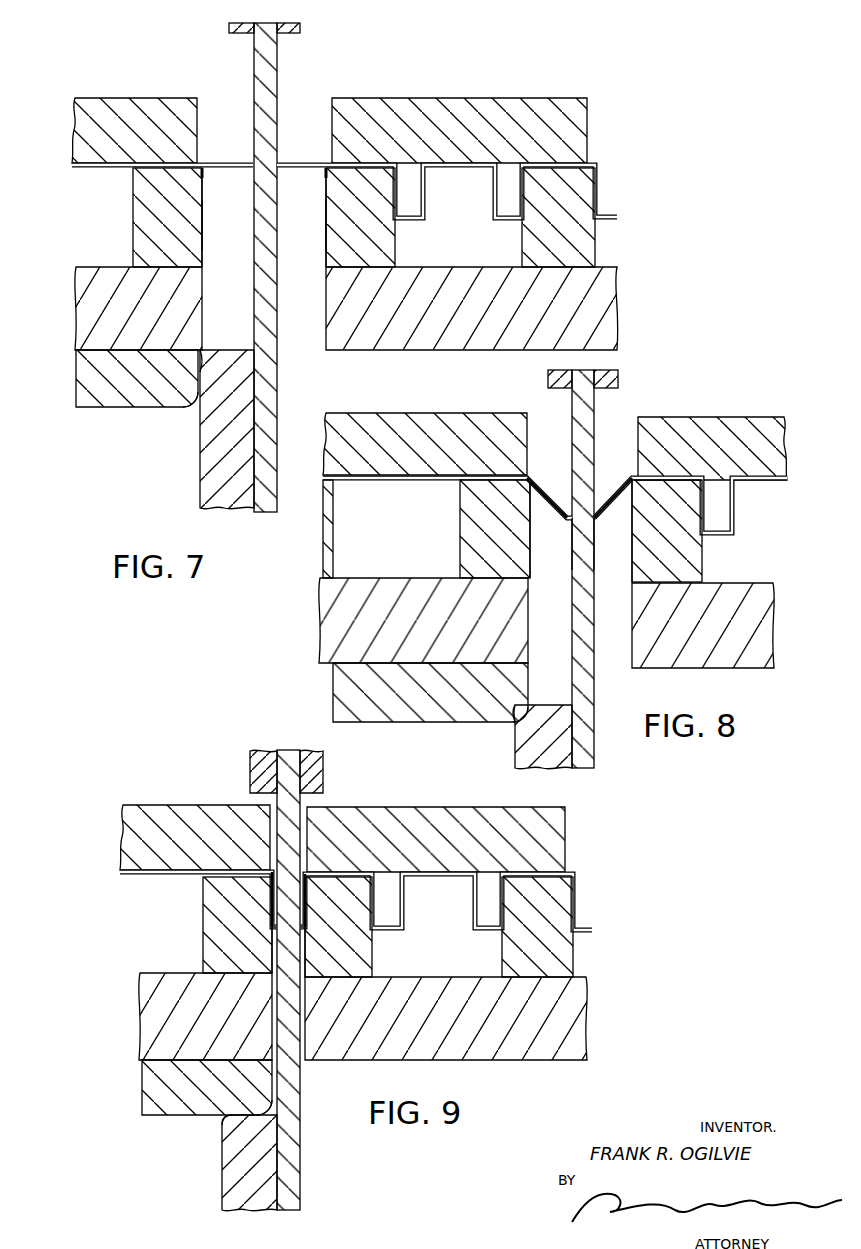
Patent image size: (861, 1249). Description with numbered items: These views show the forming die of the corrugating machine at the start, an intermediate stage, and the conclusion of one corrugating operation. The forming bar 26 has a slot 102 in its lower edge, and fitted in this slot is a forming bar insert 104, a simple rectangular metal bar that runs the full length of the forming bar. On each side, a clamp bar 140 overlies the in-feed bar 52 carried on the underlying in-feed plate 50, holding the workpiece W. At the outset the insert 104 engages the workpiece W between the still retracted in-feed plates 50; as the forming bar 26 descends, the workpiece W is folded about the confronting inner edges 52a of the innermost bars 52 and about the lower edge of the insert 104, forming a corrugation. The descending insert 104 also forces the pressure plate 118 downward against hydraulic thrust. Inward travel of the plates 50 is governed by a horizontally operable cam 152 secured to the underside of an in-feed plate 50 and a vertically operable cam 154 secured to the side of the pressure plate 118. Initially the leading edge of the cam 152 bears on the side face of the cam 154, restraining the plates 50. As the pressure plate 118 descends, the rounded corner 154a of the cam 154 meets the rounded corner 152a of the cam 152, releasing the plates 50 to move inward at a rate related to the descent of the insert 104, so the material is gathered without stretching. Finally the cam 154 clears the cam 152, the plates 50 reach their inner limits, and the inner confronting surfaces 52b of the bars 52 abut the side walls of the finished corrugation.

In FIG. 7, the forming bar 26 is at (300, 28).
In FIG. 8, the forming bar 26 is at (618, 377).
In FIG. 9, the forming bar 26 is at (323, 762).
In FIG. 8, the slot 102 is at (550, 379).
In FIG. 9, the slot 102 is at (268, 765).
In FIG. 7, the forming bar insert 104 is at (277, 62).
In FIG. 8, the forming bar insert 104 is at (594, 400).
In FIG. 9, the forming bar insert 104 is at (300, 800).
In FIG. 7, the clamp bar 140 is at (75, 128).
In FIG. 8, the clamp bar 140 is at (388, 420).
In FIG. 9, the clamp bar 140 is at (120, 838).
In FIG. 7, the workpiece W is at (85, 170).
In FIG. 8, the workpiece W is at (322, 472).
In FIG. 9, the workpiece W is at (130, 878).
In FIG. 7, the in-feed bar 52 is at (133, 210).
In FIG. 8, the in-feed bar 52 is at (334, 528).
In FIG. 9, the in-feed bar 52 is at (203, 898).
In FIG. 7, the inner edge 52a is at (204, 170).
In FIG. 8, the inner edge 52a is at (535, 481).
In FIG. 9, the inner edge 52a is at (246, 874).
In FIG. 7, the inner confronting surface 52b is at (200, 230).
In FIG. 8, the inner confronting surface 52b is at (555, 545).
In FIG. 9, the inner confronting surface 52b is at (273, 912).
In FIG. 7, the pressure plate 118 is at (252, 262).
In FIG. 8, the pressure plate 118 is at (570, 606).
In FIG. 9, the pressure plate 118 is at (270, 960).
In FIG. 7, the in-feed plate 50 is at (78, 322).
In FIG. 8, the in-feed plate 50 is at (320, 600).
In FIG. 9, the in-feed plate 50 is at (138, 1000).
In FIG. 7, the horizontally operable cam 152 is at (110, 405).
In FIG. 8, the horizontally operable cam 152 is at (392, 725).
In FIG. 9, the horizontally operable cam 152 is at (140, 1090).
In FIG. 7, the rounded corner 152a is at (188, 410).
In FIG. 8, the rounded corner 152a is at (508, 722).
In FIG. 9, the rounded corner 152a is at (278, 1112).
In FIG. 7, the vertically operable cam 154 is at (200, 490).
In FIG. 8, the vertically operable cam 154 is at (512, 764).
In FIG. 9, the vertically operable cam 154 is at (220, 1178).
In FIG. 7, the rounded corner 154a is at (205, 352).
In FIG. 8, the rounded corner 154a is at (560, 703).
In FIG. 9, the rounded corner 154a is at (225, 1124).